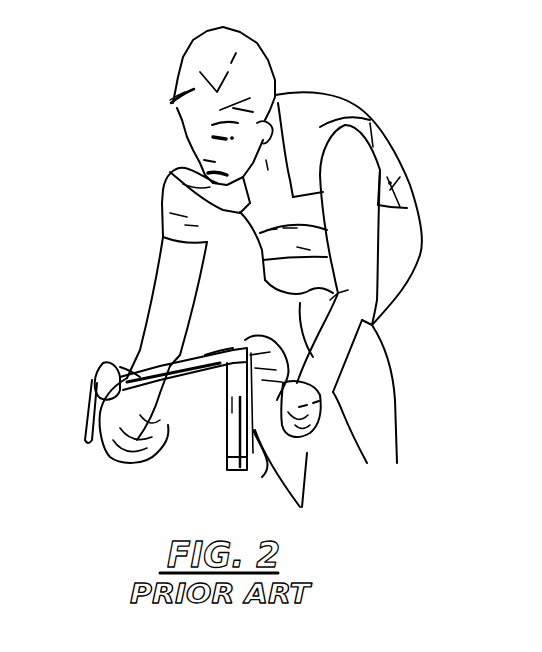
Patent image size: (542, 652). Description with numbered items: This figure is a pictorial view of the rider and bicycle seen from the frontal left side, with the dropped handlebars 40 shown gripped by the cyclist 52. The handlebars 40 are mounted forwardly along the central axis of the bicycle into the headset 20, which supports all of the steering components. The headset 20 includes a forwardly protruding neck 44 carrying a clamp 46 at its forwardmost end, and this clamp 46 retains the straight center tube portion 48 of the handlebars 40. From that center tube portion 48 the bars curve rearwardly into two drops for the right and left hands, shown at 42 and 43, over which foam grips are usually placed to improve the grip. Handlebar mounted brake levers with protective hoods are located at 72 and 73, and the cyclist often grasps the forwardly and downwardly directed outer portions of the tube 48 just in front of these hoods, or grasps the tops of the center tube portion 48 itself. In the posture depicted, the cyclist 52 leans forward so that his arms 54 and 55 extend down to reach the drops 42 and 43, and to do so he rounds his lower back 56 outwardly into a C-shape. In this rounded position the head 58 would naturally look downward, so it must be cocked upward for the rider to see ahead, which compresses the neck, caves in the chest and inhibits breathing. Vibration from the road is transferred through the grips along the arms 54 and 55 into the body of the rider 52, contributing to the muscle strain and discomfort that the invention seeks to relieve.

The headset 20 is at (229, 424).
The handlebars 40 is at (144, 370).
The right hand drop 42 is at (100, 447).
The left hand drop 43 is at (259, 424).
The neck 44 is at (223, 397).
The clamp 46 is at (213, 352).
The center tube portion 48 is at (192, 372).
The cyclist 52 is at (357, 80).
The arm 54 is at (150, 300).
The arm 55 is at (372, 325).
The lower back 56 is at (397, 160).
The head 58 is at (265, 47).
The brake lever 72 is at (88, 400).
The brake lever 73 is at (278, 350).